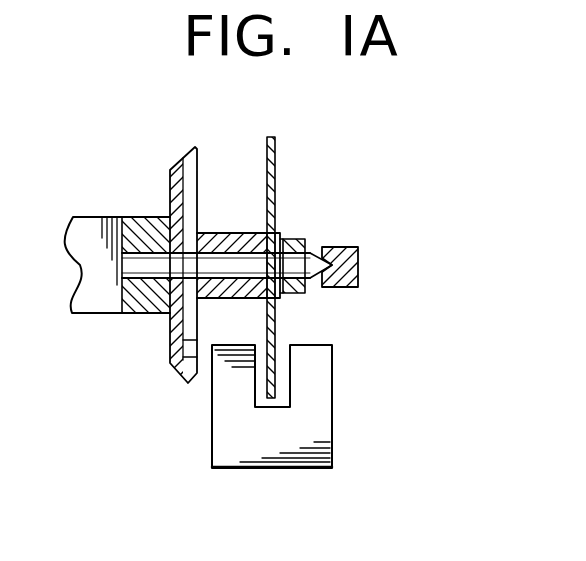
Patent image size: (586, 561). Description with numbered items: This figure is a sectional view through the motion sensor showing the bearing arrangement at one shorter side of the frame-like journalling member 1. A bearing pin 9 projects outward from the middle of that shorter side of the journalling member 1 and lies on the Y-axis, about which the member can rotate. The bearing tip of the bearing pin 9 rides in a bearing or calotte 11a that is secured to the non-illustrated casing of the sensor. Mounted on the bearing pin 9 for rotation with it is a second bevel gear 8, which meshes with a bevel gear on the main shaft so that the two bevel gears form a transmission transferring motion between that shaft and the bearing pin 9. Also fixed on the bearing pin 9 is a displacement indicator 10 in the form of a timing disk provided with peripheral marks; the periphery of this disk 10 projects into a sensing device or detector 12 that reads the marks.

The journalling member 1 is at (97, 300).
The second bevel gear 8 is at (170, 197).
The bearing pin 9 is at (217, 267).
The displacement indicator 10 is at (275, 163).
The calotte 11a is at (358, 265).
The sensing device 12 is at (312, 398).